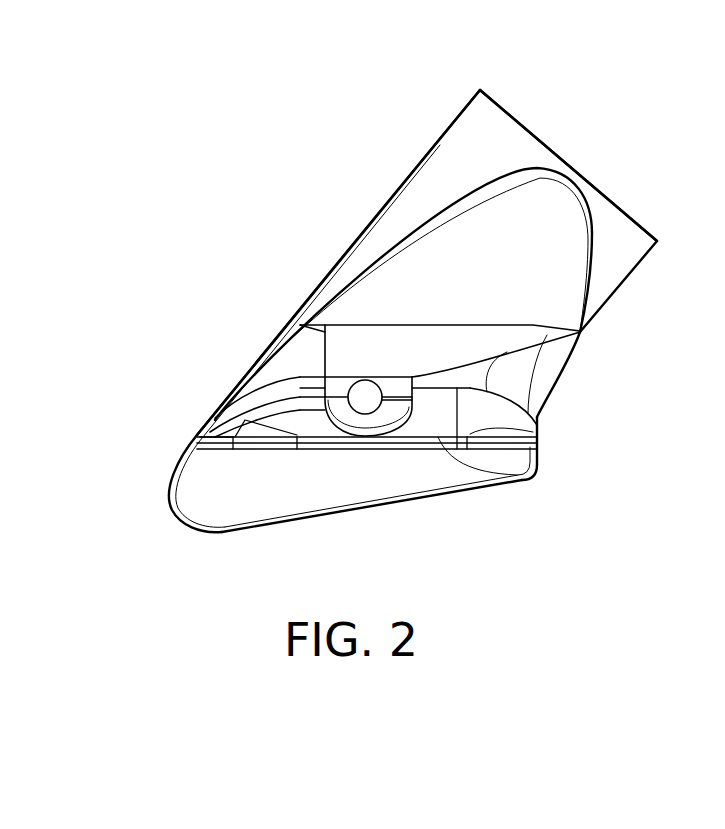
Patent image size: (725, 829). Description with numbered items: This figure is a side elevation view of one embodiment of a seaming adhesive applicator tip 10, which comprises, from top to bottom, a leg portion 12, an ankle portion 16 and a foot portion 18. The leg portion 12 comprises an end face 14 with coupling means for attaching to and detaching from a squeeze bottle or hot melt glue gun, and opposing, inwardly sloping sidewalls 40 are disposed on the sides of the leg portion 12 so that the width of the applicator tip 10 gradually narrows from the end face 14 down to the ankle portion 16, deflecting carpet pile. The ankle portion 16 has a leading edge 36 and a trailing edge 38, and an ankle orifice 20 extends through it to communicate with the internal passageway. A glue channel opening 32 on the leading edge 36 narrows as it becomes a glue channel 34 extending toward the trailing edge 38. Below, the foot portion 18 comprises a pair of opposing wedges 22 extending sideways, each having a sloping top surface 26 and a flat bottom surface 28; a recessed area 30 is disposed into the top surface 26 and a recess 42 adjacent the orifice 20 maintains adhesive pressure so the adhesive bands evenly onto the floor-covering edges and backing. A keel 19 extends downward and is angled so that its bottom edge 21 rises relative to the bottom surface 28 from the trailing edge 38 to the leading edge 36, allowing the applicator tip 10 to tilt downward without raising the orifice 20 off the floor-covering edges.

The seaming adhesive applicator tip 10 is at (466, 63).
The leg portion 12 is at (452, 124).
The end face 14 is at (523, 126).
The ankle portion 16 is at (256, 318).
The foot portion 18 is at (240, 547).
The keel 19 is at (425, 472).
The ankle orifice 20 is at (365, 396).
The bottom edge 21 is at (296, 523).
The wedge 22 is at (523, 482).
The top surface 26 is at (245, 428).
The bottom surface 28 is at (232, 446).
The recessed area 30 is at (240, 403).
The glue channel opening 32 is at (512, 380).
The glue channel 34 is at (245, 383).
The leading edge 36 is at (548, 449).
The trailing edge 38 is at (150, 446).
The sloping sidewall 40 is at (535, 277).
The recess 42 is at (397, 405).